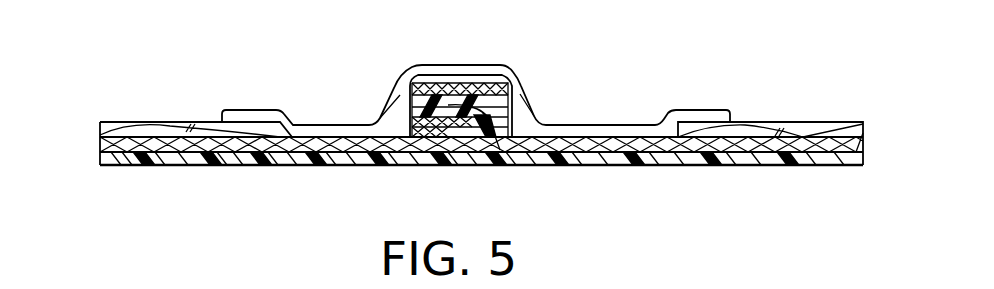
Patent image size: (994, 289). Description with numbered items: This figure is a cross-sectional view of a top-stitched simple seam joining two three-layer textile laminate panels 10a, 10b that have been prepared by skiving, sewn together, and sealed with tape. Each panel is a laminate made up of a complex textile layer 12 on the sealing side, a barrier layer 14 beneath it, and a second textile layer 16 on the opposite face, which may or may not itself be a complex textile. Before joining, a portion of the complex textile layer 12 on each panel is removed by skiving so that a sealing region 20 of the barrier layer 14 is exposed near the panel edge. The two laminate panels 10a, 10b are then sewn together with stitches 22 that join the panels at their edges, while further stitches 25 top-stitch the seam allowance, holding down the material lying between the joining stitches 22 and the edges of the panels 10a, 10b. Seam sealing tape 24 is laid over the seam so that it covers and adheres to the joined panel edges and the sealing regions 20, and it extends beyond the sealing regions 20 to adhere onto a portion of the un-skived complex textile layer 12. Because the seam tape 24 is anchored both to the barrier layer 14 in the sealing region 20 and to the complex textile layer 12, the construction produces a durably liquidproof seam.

The laminate panel 10a is at (93, 116).
The laminate panel 10b is at (868, 116).
The complex textile layer 12 is at (138, 130).
The barrier layer 14 is at (116, 138).
The second textile layer 16 is at (157, 156).
The sealing region 20 is at (318, 137).
The stitches 22 is at (485, 158).
The seam sealing tape 24 is at (718, 117).
The stitches 25 is at (423, 128).